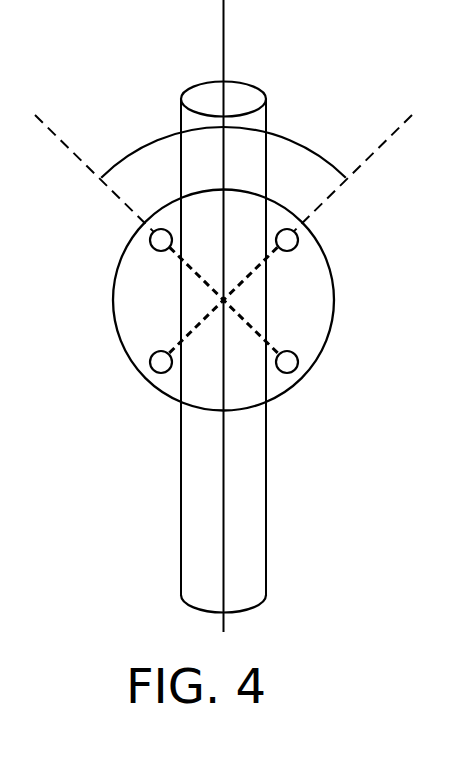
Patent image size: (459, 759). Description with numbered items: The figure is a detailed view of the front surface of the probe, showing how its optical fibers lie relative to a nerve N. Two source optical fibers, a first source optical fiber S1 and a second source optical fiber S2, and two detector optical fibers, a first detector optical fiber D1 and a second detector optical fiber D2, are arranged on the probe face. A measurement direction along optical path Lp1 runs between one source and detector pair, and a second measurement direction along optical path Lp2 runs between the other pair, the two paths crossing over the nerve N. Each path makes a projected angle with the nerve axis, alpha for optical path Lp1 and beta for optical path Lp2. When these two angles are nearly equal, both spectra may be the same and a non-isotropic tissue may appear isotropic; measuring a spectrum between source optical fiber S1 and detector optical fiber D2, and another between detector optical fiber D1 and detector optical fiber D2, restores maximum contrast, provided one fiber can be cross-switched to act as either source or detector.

The first source optical fiber S1 is at (150, 240).
The second source optical fiber S2 is at (150, 362).
The first detector optical fiber D1 is at (298, 360).
The second detector optical fiber D2 is at (298, 238).
The optical path 1 Lp1 is at (253, 318).
The optical path 2 Lp2 is at (168, 347).
The nerve N is at (223, 347).